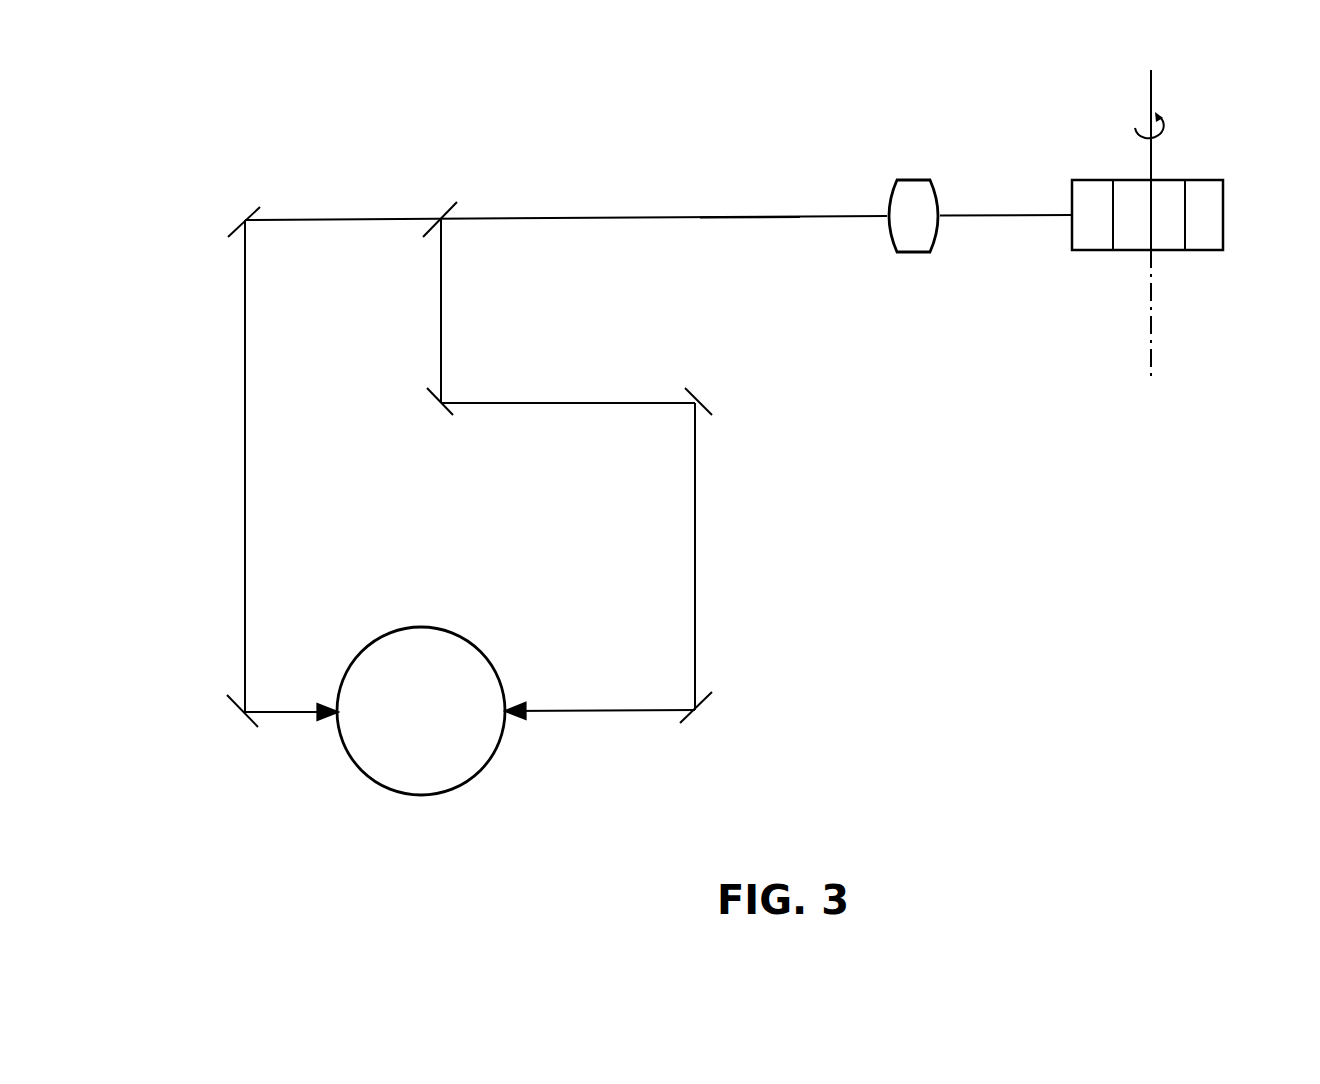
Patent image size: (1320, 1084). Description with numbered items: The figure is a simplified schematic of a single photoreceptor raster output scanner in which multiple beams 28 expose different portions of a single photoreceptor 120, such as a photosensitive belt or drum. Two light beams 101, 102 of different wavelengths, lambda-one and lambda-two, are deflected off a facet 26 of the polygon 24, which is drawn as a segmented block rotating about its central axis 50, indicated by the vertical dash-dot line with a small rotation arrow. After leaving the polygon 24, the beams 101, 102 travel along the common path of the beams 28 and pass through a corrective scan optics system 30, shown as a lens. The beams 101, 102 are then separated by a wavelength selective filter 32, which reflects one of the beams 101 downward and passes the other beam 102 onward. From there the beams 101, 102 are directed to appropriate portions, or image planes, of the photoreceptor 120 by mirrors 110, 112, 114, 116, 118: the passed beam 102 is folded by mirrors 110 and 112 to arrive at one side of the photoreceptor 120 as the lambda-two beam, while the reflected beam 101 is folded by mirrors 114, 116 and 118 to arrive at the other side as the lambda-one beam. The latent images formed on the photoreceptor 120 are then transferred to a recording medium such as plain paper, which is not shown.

The polygon 24 is at (1175, 180).
The facet 26 is at (1197, 248).
The beams 28 is at (738, 216).
The corrective scan optics system 30 is at (910, 253).
The wavelength selective filter 32 is at (452, 208).
The central axis 50 is at (1151, 97).
The light beam 101 is at (441, 313).
The light beam 102 is at (355, 218).
The mirror 110 is at (257, 210).
The mirror 112 is at (235, 707).
The mirror 114 is at (438, 402).
The mirror 116 is at (690, 388).
The mirror 118 is at (703, 702).
The photoreceptor 120 is at (452, 773).